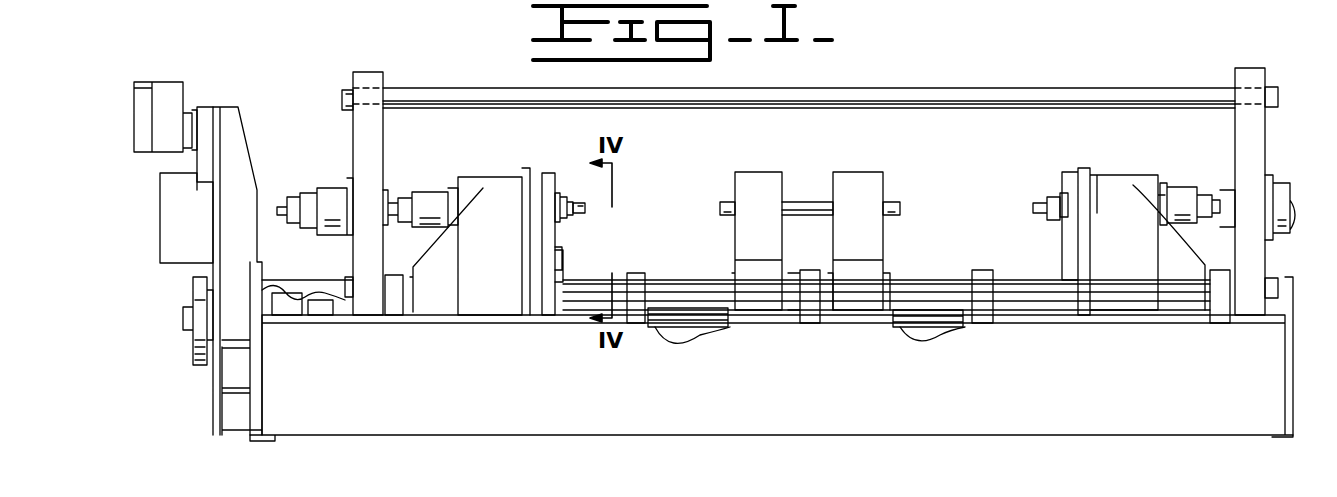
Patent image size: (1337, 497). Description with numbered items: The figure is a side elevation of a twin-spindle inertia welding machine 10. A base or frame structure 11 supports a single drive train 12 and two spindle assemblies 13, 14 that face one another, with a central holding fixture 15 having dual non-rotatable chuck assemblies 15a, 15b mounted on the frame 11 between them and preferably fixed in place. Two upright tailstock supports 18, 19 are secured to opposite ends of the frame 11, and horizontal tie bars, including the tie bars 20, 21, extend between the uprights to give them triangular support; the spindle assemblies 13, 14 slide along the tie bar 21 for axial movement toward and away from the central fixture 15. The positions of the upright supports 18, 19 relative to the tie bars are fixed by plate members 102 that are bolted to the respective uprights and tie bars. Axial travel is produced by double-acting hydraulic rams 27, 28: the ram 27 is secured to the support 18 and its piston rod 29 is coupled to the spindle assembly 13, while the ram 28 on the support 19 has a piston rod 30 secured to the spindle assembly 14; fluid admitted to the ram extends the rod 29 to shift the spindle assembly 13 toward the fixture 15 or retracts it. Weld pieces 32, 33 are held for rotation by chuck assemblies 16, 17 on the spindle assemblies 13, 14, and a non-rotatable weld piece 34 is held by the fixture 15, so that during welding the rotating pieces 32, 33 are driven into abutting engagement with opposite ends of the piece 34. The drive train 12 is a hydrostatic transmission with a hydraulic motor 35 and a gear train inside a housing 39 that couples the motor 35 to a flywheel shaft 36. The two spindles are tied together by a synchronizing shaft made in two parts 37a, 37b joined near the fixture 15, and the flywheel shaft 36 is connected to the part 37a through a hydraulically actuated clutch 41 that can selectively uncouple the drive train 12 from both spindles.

The twin-spindle inertia welding machine 10 is at (904, 82).
The base or frame structure 11 is at (750, 422).
The single drive train 12 is at (254, 141).
The spindle assembly 13 is at (543, 174).
The spindle assembly 14 is at (1117, 180).
The central holding fixture 15 is at (830, 225).
The chuck assembly 15a is at (748, 172).
The chuck assembly 15b is at (848, 172).
The chuck assembly 16 is at (558, 195).
The chuck assembly 17 is at (1055, 215).
The upright tailstock support 18 is at (357, 72).
The upright tailstock support 19 is at (1250, 70).
The tie bar 20 is at (480, 88).
The tie bar 21 is at (905, 283).
The double-acting hydraulic ram 27 is at (330, 190).
The double-acting hydraulic ram 28 is at (1280, 180).
The piston rod 29 is at (394, 200).
The piston rod 30 is at (1218, 192).
The weld piece 32 is at (578, 213).
The weld piece 33 is at (1040, 203).
The non-rotatable weld piece 34 is at (803, 205).
The hydraulic motor 35 is at (168, 84).
The flywheel shaft 36 is at (183, 320).
The synchronizing shaft part 37a is at (695, 322).
The synchronizing shaft part 37b is at (920, 325).
The housing 39 is at (252, 187).
The hydraulically actuated clutch 41 is at (287, 292).
The plate member 102 is at (345, 90).